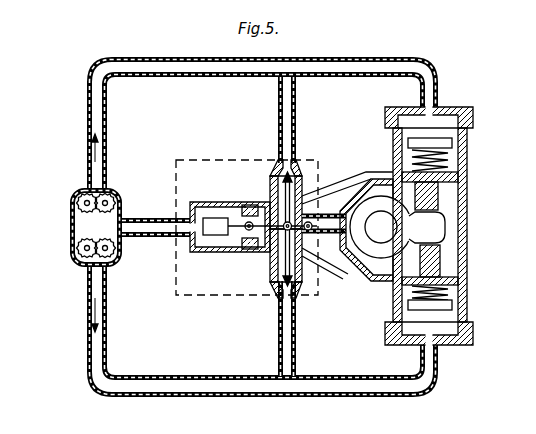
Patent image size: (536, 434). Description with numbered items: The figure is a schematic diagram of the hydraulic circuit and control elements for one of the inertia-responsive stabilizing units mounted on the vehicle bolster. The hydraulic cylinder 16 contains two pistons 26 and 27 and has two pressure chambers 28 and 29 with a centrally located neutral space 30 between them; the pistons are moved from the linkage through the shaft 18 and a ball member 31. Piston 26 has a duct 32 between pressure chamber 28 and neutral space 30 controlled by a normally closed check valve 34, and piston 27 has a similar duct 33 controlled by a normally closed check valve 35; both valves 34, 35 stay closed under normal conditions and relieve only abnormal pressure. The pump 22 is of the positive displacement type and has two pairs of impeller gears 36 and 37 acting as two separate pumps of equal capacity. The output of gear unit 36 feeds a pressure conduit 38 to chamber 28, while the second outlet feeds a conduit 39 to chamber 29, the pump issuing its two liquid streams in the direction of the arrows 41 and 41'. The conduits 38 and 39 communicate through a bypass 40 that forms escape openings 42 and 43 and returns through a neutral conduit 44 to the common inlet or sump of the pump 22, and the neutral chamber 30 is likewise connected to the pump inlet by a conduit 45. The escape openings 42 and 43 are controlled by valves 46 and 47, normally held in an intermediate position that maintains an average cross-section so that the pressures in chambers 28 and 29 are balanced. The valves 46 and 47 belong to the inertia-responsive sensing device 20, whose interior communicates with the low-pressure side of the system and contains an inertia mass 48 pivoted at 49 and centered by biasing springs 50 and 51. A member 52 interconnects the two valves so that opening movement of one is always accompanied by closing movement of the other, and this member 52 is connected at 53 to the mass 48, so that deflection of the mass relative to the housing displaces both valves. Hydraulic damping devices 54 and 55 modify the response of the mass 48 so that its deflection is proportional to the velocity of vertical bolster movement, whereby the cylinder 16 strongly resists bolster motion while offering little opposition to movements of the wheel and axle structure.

The hydraulic cylinder 16 is at (463, 243).
The shaft 18 is at (366, 233).
The inertia-responsive sensing device 20 is at (236, 297).
The pump 22 is at (70, 226).
The piston 26 is at (462, 151).
The piston 27 is at (446, 288).
The pressure chamber 28 is at (446, 118).
The pressure chamber 29 is at (446, 323).
The neutral space 30 is at (445, 201).
The ball member 31 is at (438, 228).
The duct 32 is at (466, 185).
The duct 33 is at (441, 263).
The check valve 34 is at (390, 186).
The check valve 35 is at (395, 283).
The impeller gears 36 is at (88, 183).
The impeller gears 37 is at (106, 270).
The pressure conduit 38 is at (214, 78).
The conduit 39 is at (242, 400).
The bypass 40 is at (297, 113).
The arrow 41 is at (75, 148).
The arrow 41' is at (75, 315).
The escape opening 42 is at (297, 168).
The escape opening 43 is at (298, 290).
The neutral conduit 44 is at (164, 238).
The conduit 45 is at (330, 258).
The valve 46 is at (303, 181).
The valve 47 is at (271, 277).
The inertia mass 48 is at (216, 240).
The pivot 49 is at (328, 193).
The biasing spring 50 is at (210, 208).
The biasing spring 51 is at (198, 252).
The member 52 is at (278, 175).
The connection 53 is at (261, 205).
The hydraulic damping device 54 is at (244, 206).
The hydraulic damping device 55 is at (248, 252).